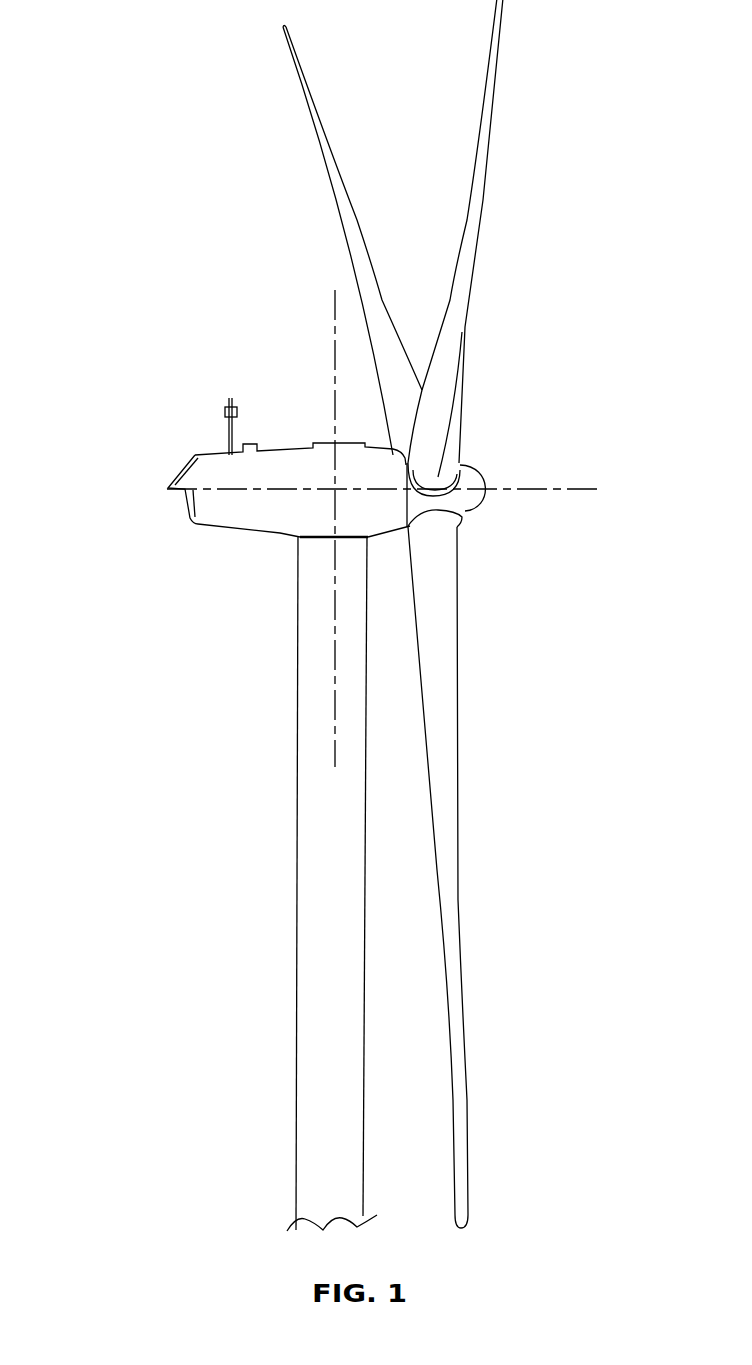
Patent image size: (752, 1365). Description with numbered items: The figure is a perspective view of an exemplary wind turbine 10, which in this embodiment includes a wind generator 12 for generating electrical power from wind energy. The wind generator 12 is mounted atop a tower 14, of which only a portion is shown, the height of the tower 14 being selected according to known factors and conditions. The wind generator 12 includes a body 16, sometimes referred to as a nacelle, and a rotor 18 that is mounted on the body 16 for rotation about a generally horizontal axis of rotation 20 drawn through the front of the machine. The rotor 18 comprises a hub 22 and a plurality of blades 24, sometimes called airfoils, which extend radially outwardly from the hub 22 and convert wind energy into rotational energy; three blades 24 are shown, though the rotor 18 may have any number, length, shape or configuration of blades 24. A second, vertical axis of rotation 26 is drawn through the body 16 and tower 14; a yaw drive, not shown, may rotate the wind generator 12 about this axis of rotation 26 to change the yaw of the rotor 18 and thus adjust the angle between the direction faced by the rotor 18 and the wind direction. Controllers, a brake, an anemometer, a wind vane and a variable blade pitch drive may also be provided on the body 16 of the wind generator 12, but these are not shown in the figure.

The wind turbine 10 is at (130, 246).
The wind generator 12 is at (298, 397).
The tower 14 is at (298, 827).
The body 16 is at (246, 533).
The rotor 18 is at (572, 278).
The axis of rotation 20 is at (399, 492).
The hub 22 is at (481, 502).
The blades 24 is at (320, 115).
The axis of rotation 26 is at (333, 306).